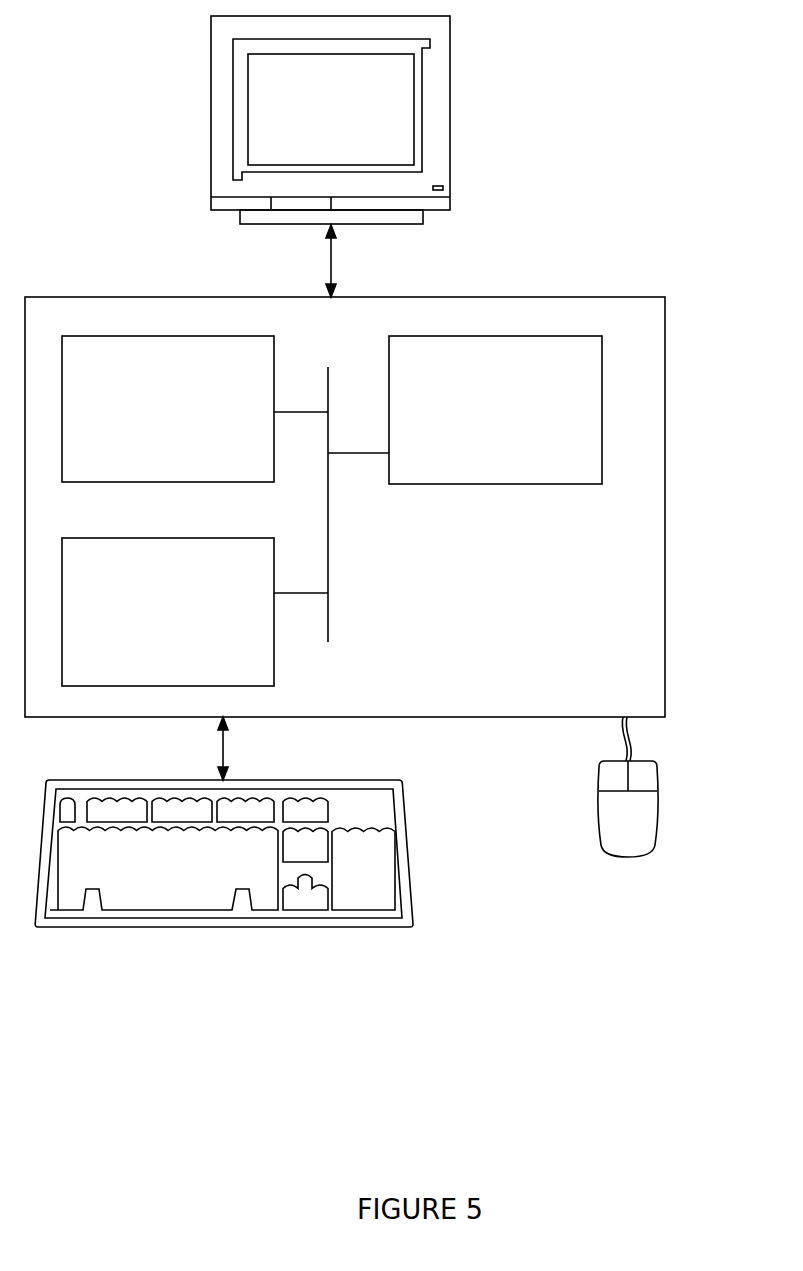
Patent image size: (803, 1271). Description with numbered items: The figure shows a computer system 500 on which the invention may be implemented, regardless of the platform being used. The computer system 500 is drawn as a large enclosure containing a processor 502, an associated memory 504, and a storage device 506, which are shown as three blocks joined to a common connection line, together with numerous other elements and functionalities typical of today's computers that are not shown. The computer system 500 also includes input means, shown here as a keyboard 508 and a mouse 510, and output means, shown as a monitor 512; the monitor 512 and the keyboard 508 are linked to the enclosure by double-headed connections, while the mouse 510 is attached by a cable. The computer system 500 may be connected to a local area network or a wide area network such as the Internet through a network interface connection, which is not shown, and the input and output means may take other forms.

The computer system 500 is at (646, 173).
The processor 502 is at (484, 418).
The memory 504 is at (149, 420).
The storage device 506 is at (144, 622).
The keyboard 508 is at (143, 880).
The mouse 510 is at (608, 828).
The monitor 512 is at (311, 124).